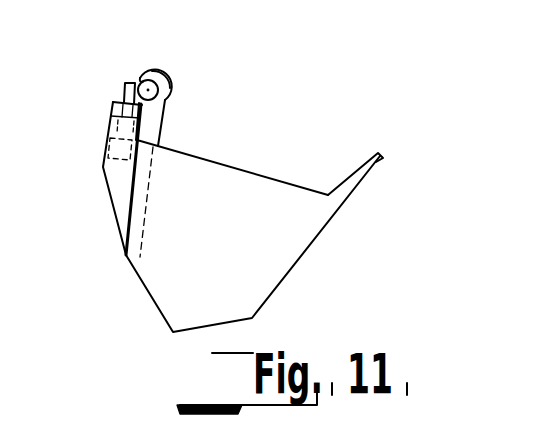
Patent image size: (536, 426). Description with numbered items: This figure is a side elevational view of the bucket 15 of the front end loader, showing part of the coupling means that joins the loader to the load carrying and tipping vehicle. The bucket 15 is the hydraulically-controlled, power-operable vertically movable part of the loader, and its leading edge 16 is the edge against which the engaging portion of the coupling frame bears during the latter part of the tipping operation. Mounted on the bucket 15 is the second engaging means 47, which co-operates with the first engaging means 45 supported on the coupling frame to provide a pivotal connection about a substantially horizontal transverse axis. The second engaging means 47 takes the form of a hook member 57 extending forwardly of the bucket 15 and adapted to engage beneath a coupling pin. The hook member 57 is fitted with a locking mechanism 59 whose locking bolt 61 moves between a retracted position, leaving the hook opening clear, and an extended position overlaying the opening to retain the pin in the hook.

The bucket 15 is at (325, 228).
The leading edge 16 is at (382, 154).
The first engaging means 45 is at (138, 82).
The second engaging means 47 is at (170, 74).
The hook member 57 is at (171, 100).
The locking mechanism 59 is at (111, 122).
The locking bolt 61 is at (122, 92).